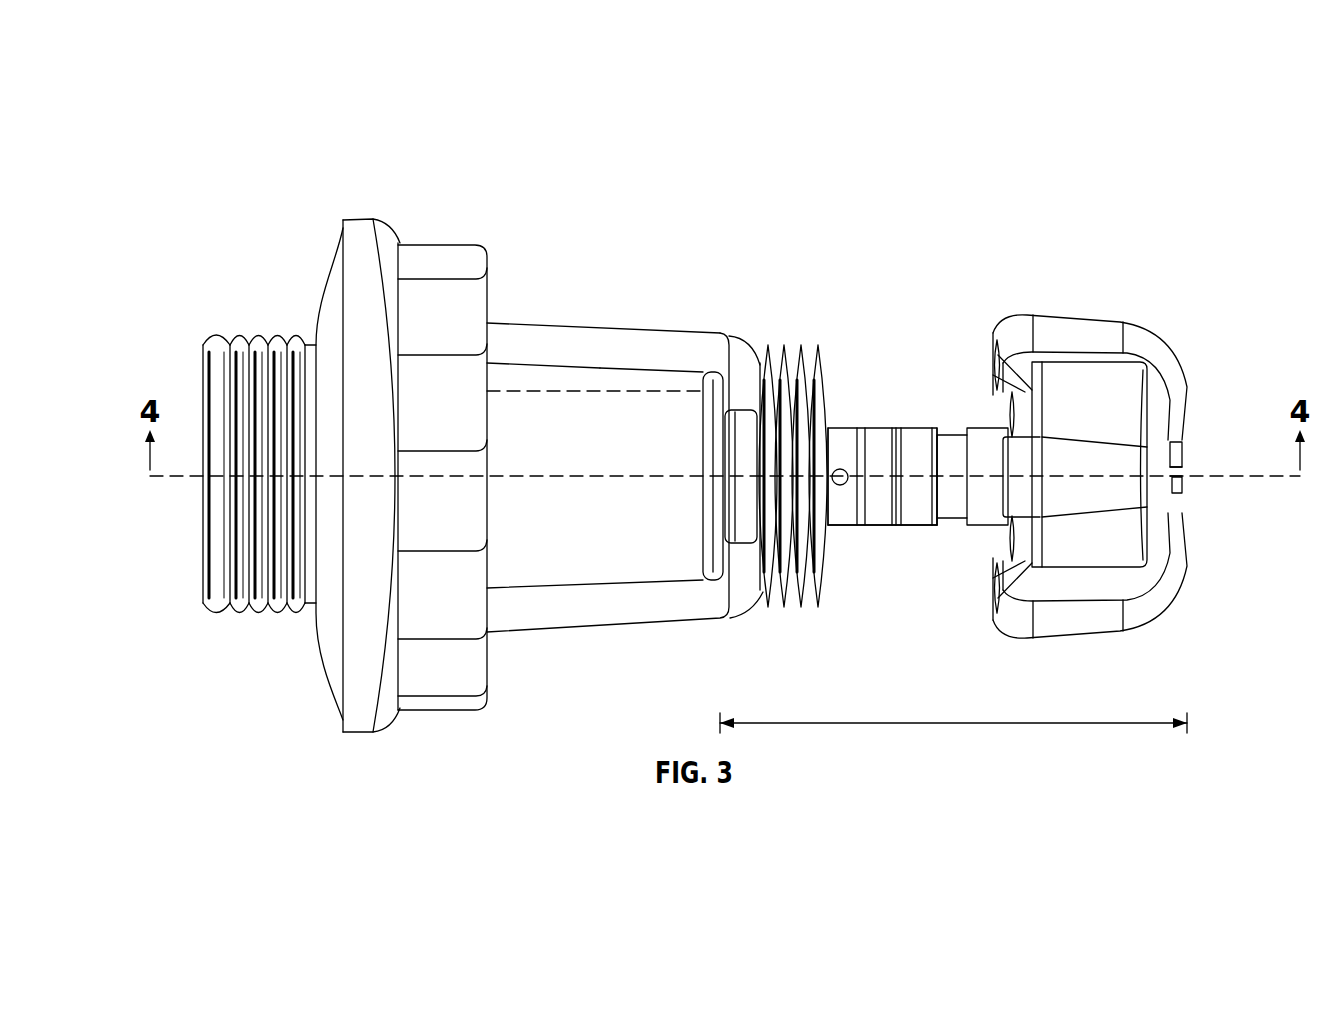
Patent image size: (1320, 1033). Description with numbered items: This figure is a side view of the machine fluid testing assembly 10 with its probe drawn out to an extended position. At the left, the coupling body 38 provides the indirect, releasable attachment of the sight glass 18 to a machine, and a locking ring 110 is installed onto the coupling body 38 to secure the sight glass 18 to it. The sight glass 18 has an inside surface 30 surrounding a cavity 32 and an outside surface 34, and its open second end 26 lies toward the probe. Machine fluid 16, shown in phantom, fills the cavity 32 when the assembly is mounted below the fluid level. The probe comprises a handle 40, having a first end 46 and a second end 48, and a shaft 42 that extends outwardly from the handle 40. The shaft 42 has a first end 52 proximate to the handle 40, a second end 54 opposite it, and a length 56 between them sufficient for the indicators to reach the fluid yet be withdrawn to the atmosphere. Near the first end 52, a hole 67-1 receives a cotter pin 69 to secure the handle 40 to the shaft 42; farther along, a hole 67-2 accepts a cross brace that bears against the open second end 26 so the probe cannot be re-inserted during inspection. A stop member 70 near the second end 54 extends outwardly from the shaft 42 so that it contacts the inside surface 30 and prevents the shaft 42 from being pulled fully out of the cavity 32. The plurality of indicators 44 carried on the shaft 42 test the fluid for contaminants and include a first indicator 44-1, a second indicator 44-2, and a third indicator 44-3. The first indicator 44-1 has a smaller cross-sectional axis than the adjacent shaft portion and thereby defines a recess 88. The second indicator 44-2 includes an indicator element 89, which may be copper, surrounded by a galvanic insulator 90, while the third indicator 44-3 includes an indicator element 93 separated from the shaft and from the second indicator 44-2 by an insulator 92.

The machine fluid testing assembly 10 is at (342, 128).
The machine fluid 16 is at (662, 390).
The sight glass 18 is at (540, 631).
The open second end 26 is at (746, 612).
The inside surface 30 is at (572, 375).
The cavity 32 is at (528, 375).
The outside surface 34 is at (617, 325).
The coupling body 38 is at (358, 228).
The handle 40 is at (1081, 584).
The shaft 42 is at (901, 418).
The plurality of indicators 44 is at (914, 538).
The first indicator 44-1 is at (961, 494).
The second indicator 44-2 is at (913, 436).
The third indicator 44-3 is at (876, 448).
The first end 46 is at (1182, 360).
The second end 48 is at (996, 372).
The first end 52 is at (1185, 500).
The second end 54 is at (713, 538).
The length 56 is at (950, 721).
The hole 67-1 is at (1183, 485).
The hole 67-2 is at (836, 470).
The cotter pin 69 is at (1182, 460).
The stop member 70 is at (710, 508).
The recess 88 is at (960, 430).
The indicator element 89 is at (922, 522).
The insulator 90 is at (940, 530).
The insulator 92 is at (858, 523).
The indicator element 93 is at (870, 524).
The locking ring 110 is at (440, 250).